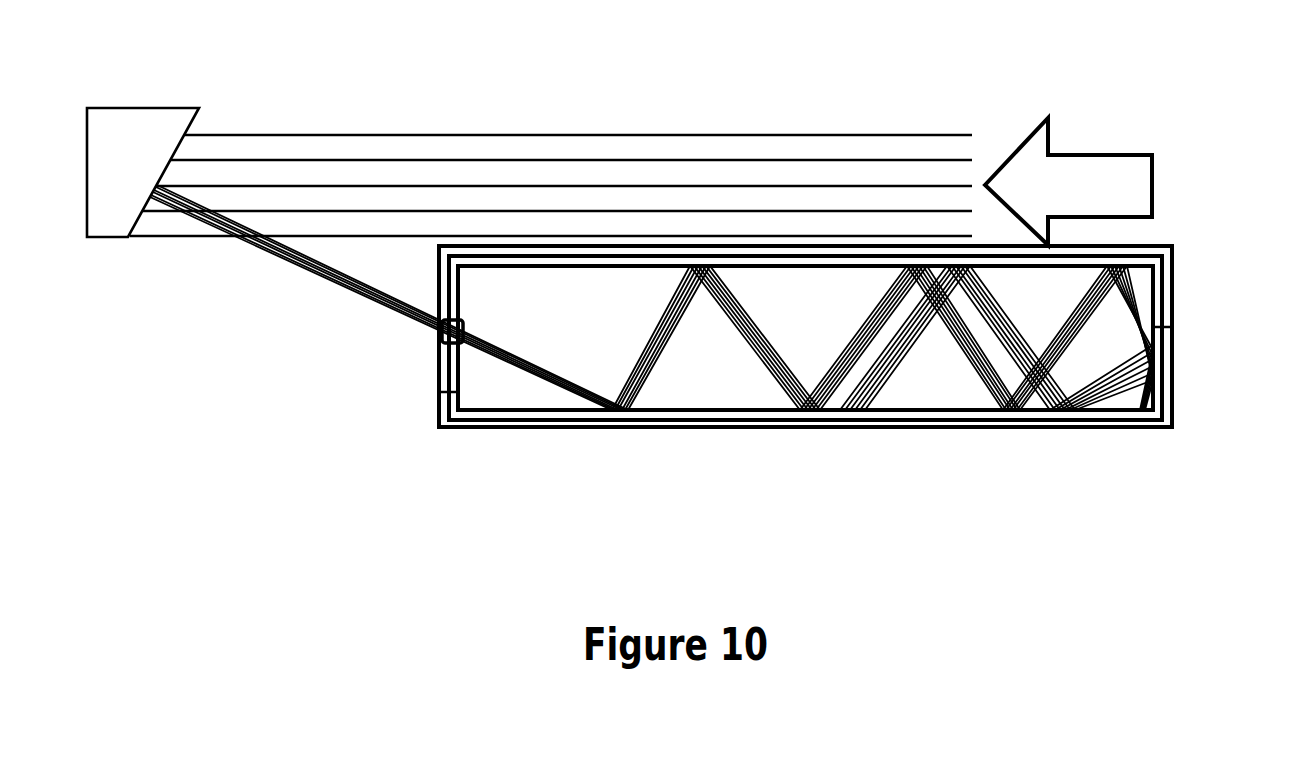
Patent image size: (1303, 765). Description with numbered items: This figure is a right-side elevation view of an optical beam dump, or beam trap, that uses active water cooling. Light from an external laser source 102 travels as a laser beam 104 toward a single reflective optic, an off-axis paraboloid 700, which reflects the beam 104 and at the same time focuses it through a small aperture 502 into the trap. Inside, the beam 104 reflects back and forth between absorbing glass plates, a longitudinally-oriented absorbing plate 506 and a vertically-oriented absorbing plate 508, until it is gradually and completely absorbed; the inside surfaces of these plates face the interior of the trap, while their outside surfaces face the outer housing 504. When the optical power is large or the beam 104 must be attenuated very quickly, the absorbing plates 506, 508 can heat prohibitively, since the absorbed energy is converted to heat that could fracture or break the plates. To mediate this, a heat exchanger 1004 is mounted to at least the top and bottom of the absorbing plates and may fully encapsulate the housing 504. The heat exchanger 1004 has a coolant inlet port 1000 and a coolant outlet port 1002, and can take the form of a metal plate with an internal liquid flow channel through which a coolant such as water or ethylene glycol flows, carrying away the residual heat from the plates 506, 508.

The off-axis paraboloid 700 is at (86, 240).
The laser beam 104 is at (665, 135).
The external laser source 102 is at (1102, 155).
The coolant inlet port 1000 is at (445, 426).
The outer housing 504 is at (727, 421).
The longitudinally-oriented absorbing plate 506 is at (830, 411).
The vertically-oriented absorbing plate 508 is at (441, 395).
The aperture 502 is at (438, 343).
The heat exchanger 1004 is at (1093, 424).
The coolant outlet port 1002 is at (1168, 426).